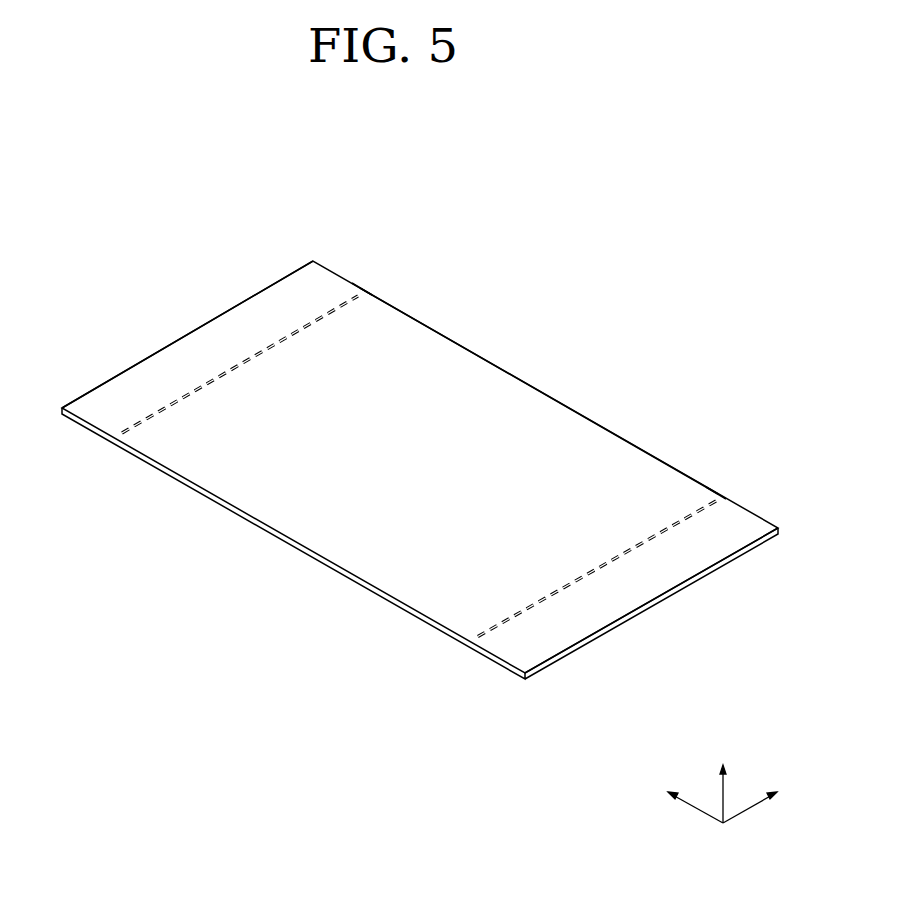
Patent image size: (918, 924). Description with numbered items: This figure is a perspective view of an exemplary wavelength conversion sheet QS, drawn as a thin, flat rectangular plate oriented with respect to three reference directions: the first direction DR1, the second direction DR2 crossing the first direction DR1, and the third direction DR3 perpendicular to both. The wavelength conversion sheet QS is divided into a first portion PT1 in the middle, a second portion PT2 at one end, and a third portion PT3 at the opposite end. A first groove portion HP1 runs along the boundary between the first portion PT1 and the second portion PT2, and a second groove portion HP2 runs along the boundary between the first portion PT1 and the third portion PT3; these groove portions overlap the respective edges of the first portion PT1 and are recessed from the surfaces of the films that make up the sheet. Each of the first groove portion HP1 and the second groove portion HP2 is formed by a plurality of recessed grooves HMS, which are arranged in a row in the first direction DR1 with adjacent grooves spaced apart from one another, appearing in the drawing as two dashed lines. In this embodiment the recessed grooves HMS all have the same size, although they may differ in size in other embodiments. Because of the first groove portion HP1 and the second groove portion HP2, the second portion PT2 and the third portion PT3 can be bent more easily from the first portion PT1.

The wavelength conversion sheet QS is at (726, 376).
The first portion PT1 is at (520, 392).
The second portion PT2 is at (320, 272).
The third portion PT3 is at (748, 523).
The recessed grooves HMS is at (360, 290).
The first groove portion HP1 is at (275, 335).
The second groove portion HP2 is at (660, 540).
The first direction DR1 is at (769, 802).
The second direction DR2 is at (675, 802).
The third direction DR3 is at (723, 780).